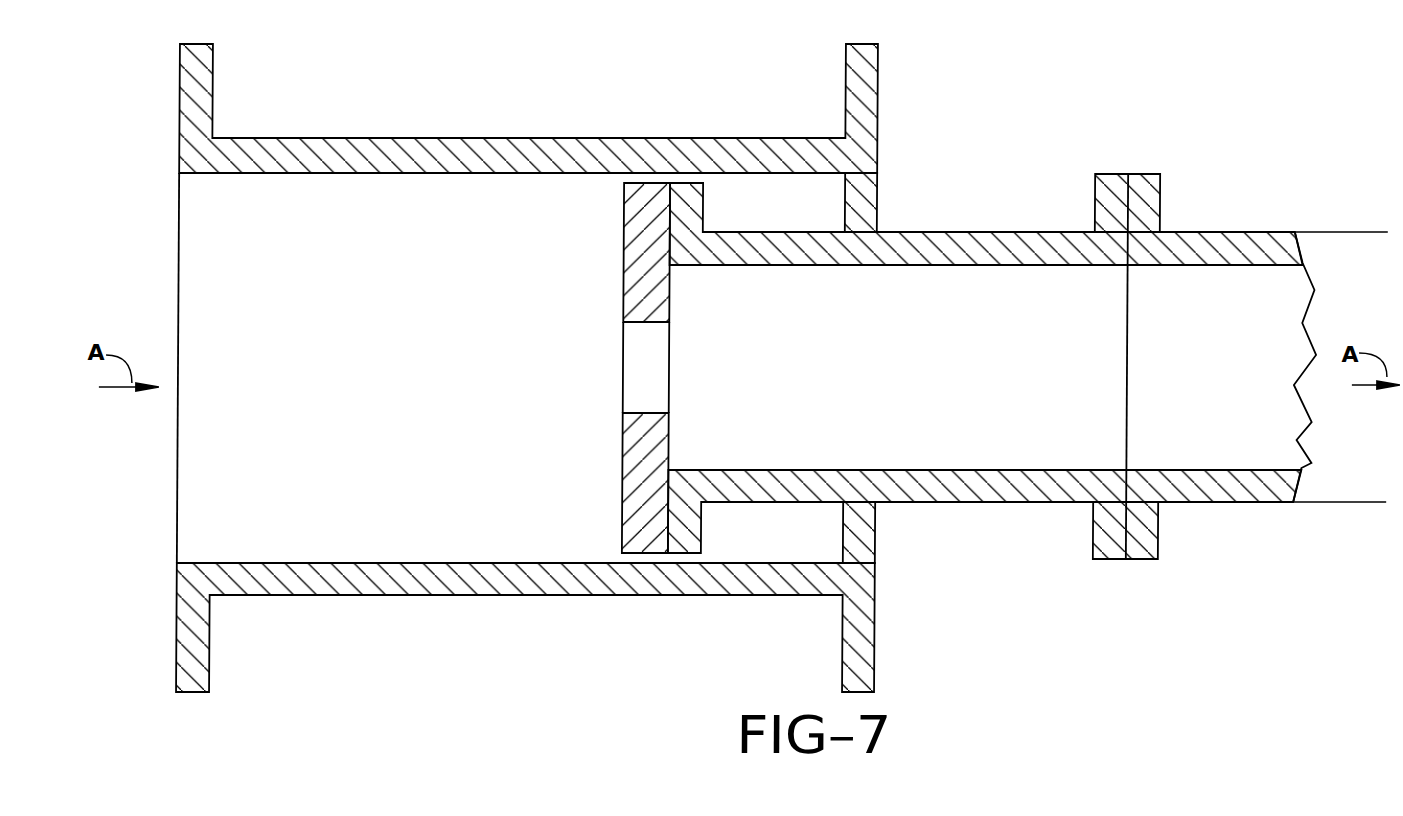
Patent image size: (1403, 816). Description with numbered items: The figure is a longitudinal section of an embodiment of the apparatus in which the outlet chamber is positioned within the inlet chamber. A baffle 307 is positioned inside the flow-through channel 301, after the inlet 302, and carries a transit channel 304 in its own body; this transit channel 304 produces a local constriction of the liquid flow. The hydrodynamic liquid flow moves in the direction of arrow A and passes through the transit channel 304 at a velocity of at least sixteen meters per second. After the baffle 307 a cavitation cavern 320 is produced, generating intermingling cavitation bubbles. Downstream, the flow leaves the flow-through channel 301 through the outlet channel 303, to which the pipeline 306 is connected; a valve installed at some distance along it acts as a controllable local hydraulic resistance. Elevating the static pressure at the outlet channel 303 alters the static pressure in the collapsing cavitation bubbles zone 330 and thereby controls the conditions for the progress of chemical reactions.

The flow-through channel 301 is at (732, 248).
The inlet 302 is at (178, 293).
The outlet channel 303 is at (1128, 348).
The transit channel 304 is at (657, 364).
The pipeline 306 is at (1185, 242).
The baffle 307 is at (647, 197).
The cavitation cavern 320 is at (730, 452).
The collapsing cavitation bubbles zone 330 is at (1163, 445).